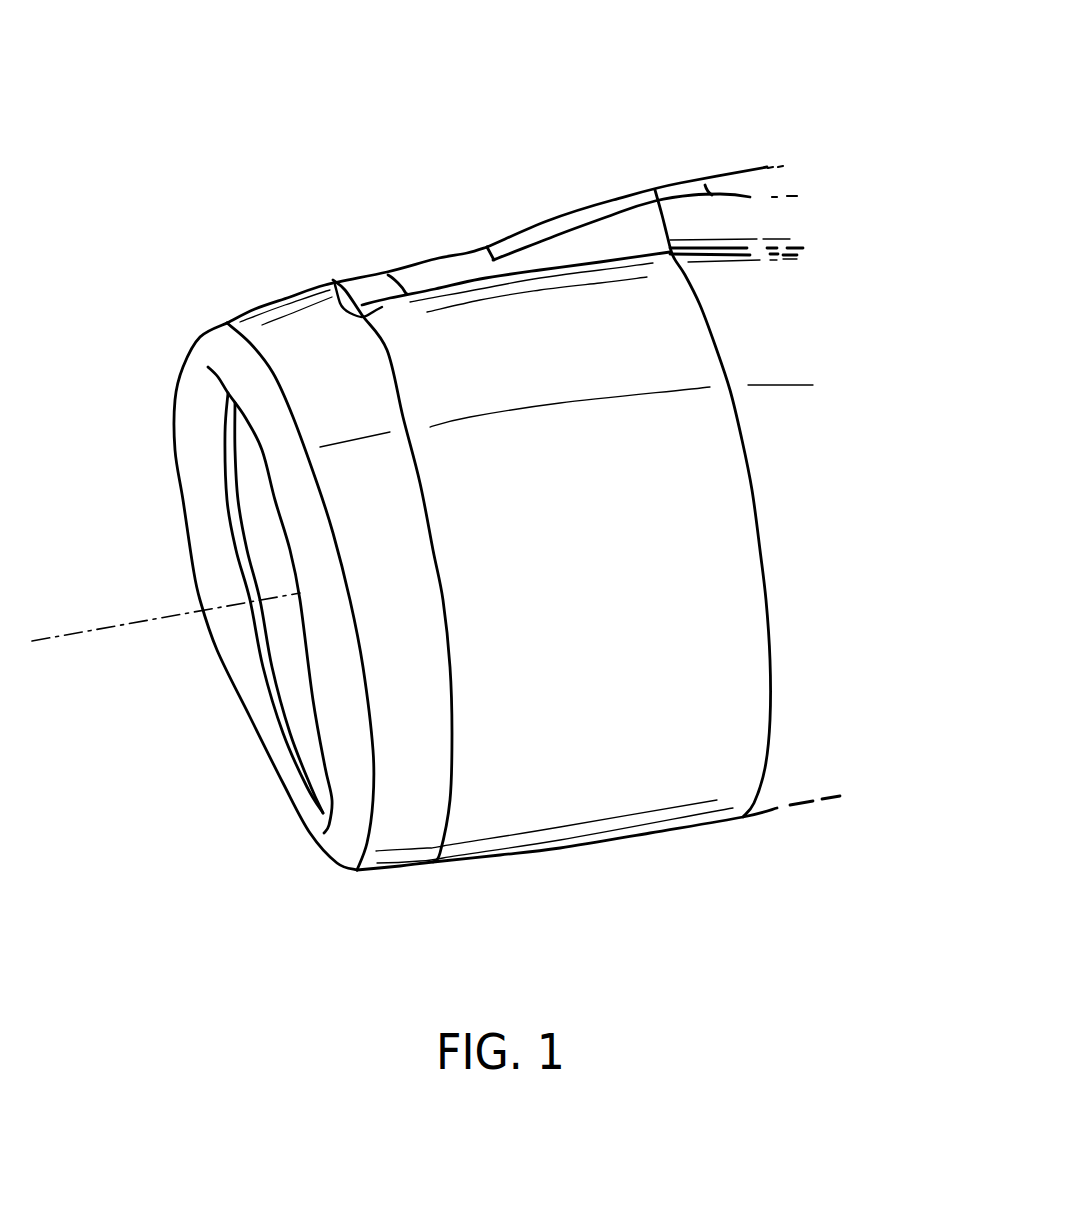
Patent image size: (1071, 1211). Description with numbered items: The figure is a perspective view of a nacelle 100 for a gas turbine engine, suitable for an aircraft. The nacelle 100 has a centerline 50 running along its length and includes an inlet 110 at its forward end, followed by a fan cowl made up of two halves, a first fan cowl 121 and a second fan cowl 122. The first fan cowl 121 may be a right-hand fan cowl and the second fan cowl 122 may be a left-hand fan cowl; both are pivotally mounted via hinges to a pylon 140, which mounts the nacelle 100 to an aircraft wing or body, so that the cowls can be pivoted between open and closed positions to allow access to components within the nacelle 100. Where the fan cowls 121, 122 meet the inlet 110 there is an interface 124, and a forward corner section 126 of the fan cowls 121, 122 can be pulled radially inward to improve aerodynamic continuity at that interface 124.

The nacelle 100 is at (273, 93).
The inlet 110 is at (225, 322).
The first fan cowl 121 is at (358, 270).
The second fan cowl 122 is at (502, 348).
The interface 124 is at (373, 337).
The forward corner section 126 is at (333, 283).
The pylon 140 is at (605, 198).
The centerline 50 is at (87, 630).